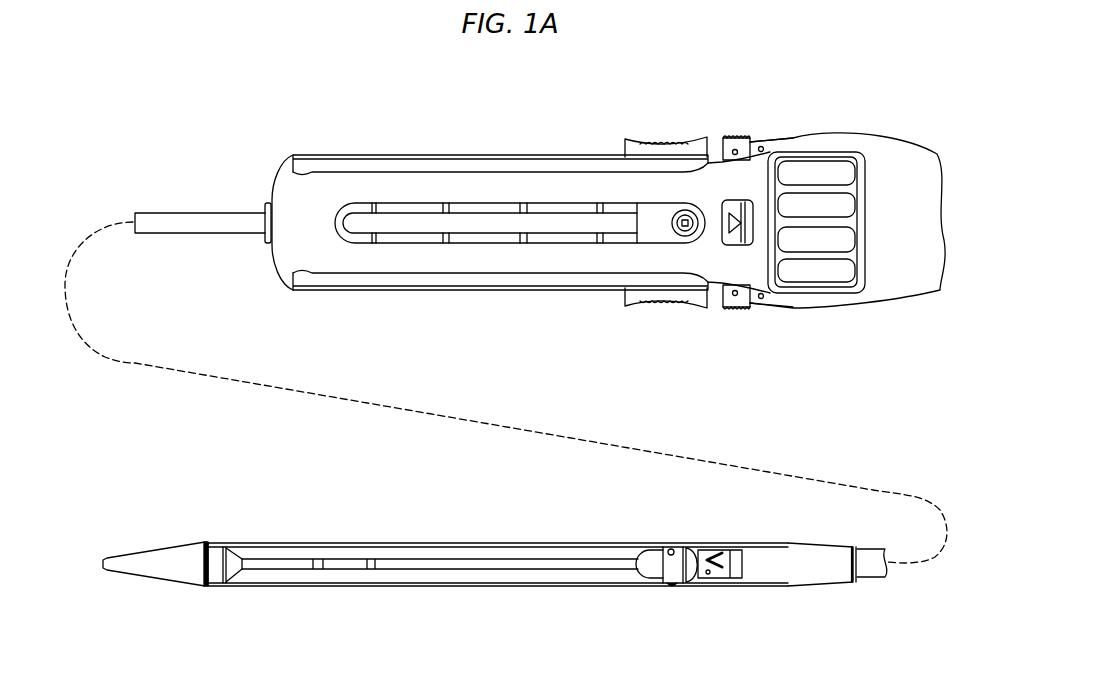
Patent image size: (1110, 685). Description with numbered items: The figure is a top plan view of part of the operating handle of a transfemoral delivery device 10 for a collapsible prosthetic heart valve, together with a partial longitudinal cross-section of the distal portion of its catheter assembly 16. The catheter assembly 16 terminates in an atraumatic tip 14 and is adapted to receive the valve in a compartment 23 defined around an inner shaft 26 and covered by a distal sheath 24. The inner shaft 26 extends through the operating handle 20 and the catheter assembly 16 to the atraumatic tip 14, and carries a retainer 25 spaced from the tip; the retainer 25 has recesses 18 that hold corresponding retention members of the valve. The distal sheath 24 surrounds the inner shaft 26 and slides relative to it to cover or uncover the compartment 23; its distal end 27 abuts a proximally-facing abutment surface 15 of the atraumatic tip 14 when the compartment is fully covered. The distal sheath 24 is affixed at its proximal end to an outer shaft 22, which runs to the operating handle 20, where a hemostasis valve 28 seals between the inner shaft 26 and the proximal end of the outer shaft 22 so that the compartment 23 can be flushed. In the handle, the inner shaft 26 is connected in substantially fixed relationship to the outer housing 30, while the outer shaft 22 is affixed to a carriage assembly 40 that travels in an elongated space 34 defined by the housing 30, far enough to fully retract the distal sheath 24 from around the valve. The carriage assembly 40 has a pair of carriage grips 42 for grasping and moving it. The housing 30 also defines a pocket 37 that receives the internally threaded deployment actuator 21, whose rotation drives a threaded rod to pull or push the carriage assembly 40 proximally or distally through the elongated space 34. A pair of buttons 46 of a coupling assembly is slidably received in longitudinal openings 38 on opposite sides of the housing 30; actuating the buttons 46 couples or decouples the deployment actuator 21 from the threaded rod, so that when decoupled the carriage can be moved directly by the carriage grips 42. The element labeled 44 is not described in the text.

The transfemoral delivery device 10 is at (164, 126).
The atraumatic tip 14 is at (103, 564).
The abutment surface 15 is at (205, 543).
The catheter assembly 16 is at (358, 596).
The recesses 18 is at (671, 548).
The operating handle 20 is at (896, 122).
The deployment actuator 21 is at (786, 282).
The outer shaft 22 is at (197, 213).
The compartment 23 is at (399, 548).
The distal sheath 24 is at (498, 589).
The retainer 25 is at (675, 585).
The inner shaft 26 is at (540, 571).
The distal end 27 is at (213, 543).
The hemostasis valve 28 is at (673, 237).
The outer housing 30 is at (560, 156).
The elongated space 34 is at (481, 204).
The pocket 37 is at (860, 286).
The longitudinal openings 38 is at (779, 138).
The carriage assembly 40 is at (632, 233).
The carriage grips 42 is at (648, 140).
The button 44 is at (726, 248).
The buttons 46 is at (735, 134).